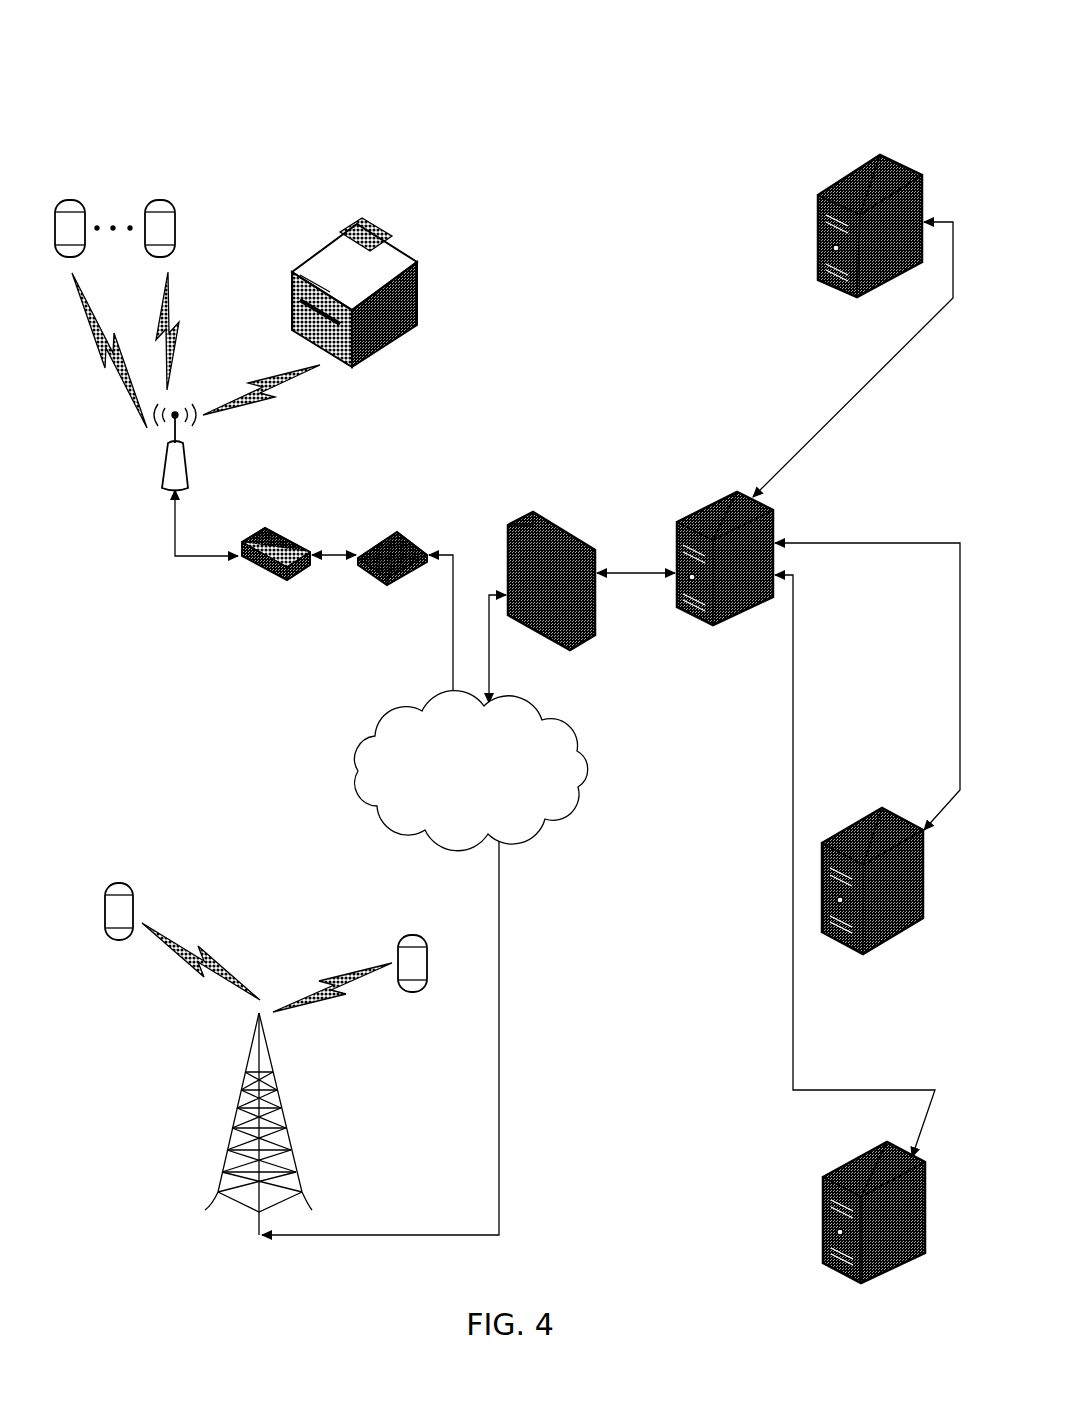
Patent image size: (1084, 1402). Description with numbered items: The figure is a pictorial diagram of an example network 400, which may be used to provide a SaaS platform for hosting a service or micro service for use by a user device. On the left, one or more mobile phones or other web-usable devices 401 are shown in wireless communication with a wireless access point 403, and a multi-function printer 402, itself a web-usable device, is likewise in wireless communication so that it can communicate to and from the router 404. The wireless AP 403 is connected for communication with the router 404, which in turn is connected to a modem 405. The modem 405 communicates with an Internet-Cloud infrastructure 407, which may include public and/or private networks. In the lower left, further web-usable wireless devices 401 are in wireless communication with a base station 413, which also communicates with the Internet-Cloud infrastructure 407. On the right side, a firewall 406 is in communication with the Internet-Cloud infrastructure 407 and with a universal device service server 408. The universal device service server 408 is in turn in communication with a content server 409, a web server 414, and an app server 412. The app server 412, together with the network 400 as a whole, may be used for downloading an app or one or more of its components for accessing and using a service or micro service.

The network 400 is at (192, 113).
The web-usable devices 401 is at (412, 935).
The multi-function printer 402 is at (420, 265).
The wireless access point 403 is at (188, 458).
The router 404 is at (255, 575).
The modem 405 is at (383, 582).
The firewall 406 is at (552, 515).
The Internet-Cloud infrastructure 407 is at (471, 771).
The universal device service server 408 is at (730, 490).
The content server 409 is at (818, 198).
The app server 412 is at (823, 1177).
The base station 413 is at (286, 1127).
The web server 414 is at (882, 808).